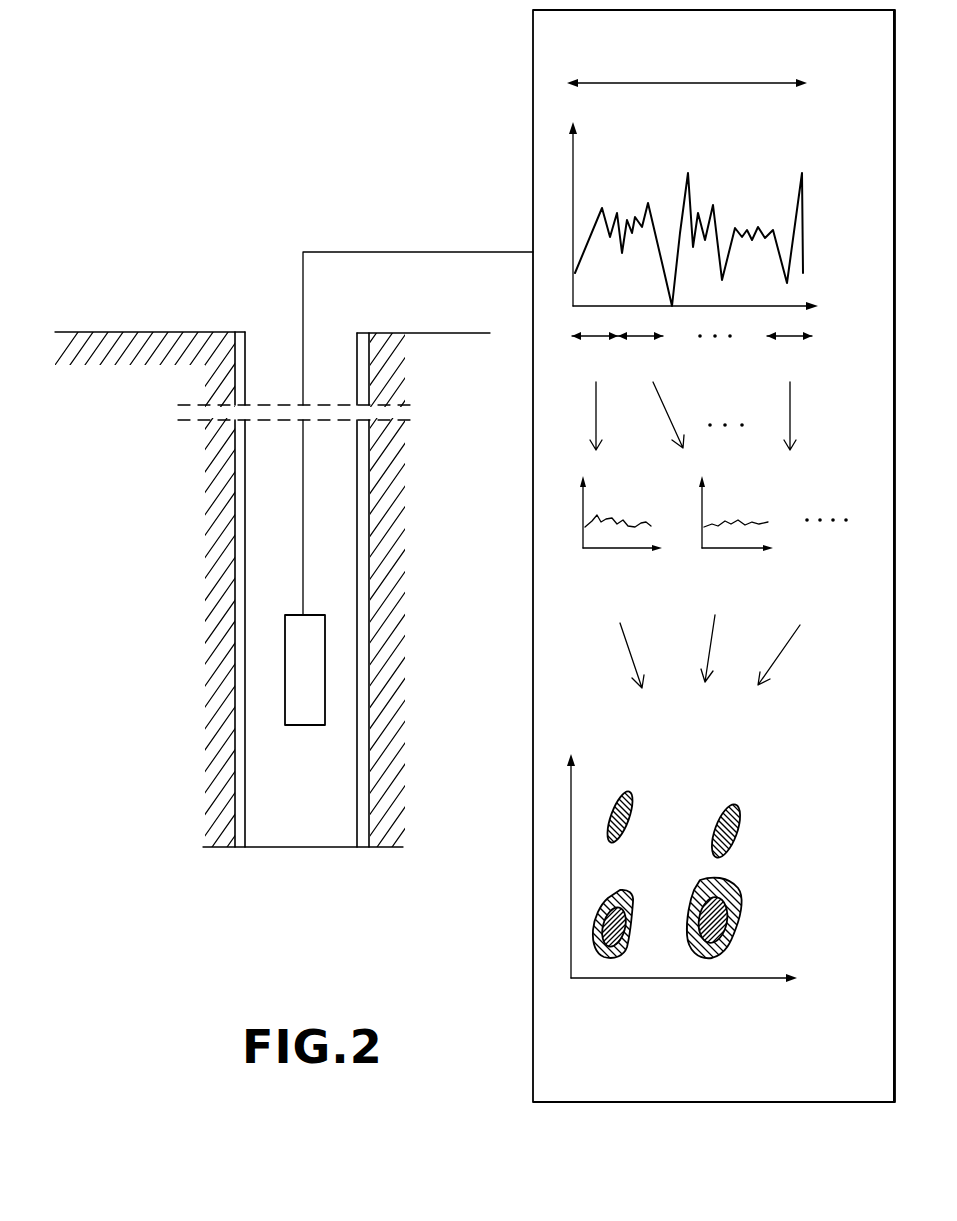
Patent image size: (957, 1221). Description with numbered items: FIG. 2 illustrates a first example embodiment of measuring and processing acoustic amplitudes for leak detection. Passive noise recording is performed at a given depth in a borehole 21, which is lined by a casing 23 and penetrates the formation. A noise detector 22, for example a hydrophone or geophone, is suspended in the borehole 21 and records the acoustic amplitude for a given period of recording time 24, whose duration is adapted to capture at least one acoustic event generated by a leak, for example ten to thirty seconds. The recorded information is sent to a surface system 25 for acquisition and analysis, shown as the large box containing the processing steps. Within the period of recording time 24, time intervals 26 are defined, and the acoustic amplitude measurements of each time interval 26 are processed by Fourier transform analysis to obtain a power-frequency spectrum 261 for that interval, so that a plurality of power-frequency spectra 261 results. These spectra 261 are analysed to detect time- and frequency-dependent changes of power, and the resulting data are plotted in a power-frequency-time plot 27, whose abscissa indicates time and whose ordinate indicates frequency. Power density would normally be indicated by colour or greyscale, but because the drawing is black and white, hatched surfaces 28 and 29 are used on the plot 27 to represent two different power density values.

The borehole 21 is at (317, 847).
The noise detector 22 is at (285, 687).
The casing 23 is at (367, 772).
The period of recording time 24 is at (687, 71).
The surface system 25 is at (533, 60).
The time intervals 26 is at (692, 348).
The power-frequency spectrum 261 is at (605, 557).
The power-frequency-time plot 27 is at (715, 1042).
The hatched surface 28 is at (625, 955).
The hatched surface 29 is at (628, 798).